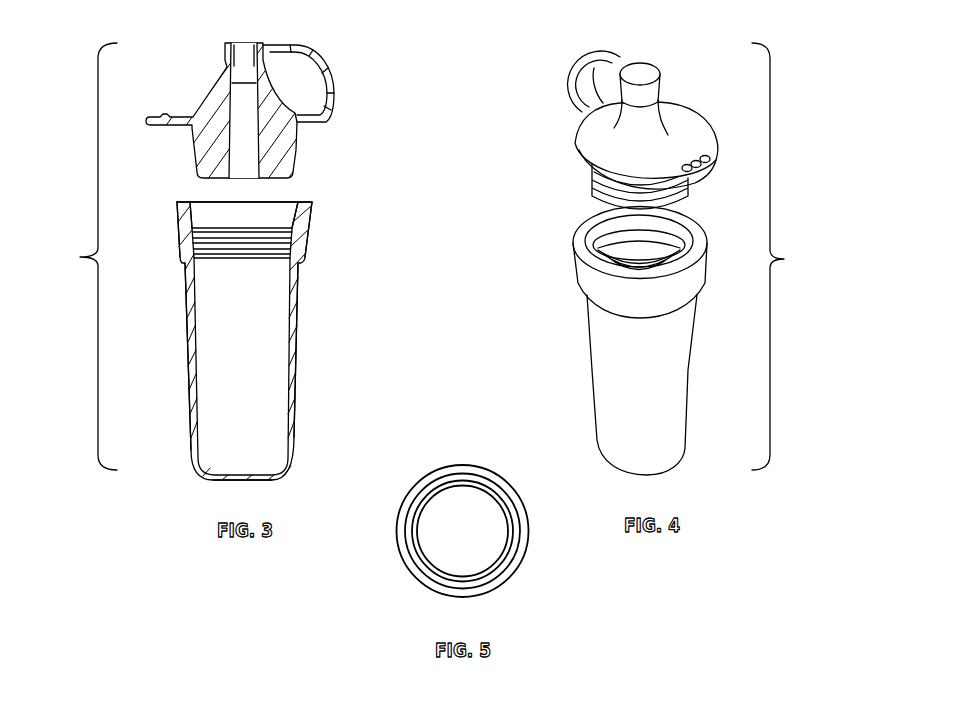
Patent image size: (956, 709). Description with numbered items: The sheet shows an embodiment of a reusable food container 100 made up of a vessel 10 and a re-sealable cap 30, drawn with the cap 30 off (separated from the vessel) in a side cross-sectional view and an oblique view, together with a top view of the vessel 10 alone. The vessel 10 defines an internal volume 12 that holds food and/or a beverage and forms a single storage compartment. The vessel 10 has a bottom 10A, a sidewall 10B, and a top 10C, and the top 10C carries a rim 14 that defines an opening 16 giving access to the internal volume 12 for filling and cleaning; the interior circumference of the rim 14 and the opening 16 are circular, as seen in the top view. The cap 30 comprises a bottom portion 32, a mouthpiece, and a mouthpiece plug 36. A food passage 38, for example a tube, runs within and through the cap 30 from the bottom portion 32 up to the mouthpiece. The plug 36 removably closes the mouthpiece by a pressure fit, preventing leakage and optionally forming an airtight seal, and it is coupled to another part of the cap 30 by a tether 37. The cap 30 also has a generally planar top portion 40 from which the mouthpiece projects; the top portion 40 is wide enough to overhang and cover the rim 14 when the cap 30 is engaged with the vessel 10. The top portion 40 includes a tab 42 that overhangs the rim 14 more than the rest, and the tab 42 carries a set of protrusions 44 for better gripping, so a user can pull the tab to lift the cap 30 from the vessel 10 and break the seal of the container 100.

In FIG. 3, the vessel 10 is at (216, 344).
In FIG. 4, the vessel 10 is at (590, 347).
In FIG. 3, the bottom 10A is at (207, 481).
In FIG. 3, the sidewall 10B is at (190, 382).
In FIG. 3, the top 10C is at (182, 248).
In FIG. 3, the internal volume 12 is at (236, 374).
In FIG. 3, the rim 14 is at (307, 210).
In FIG. 4, the rim 14 is at (586, 222).
In FIG. 5, the rim 14 is at (443, 473).
In FIG. 3, the opening 16 is at (242, 243).
In FIG. 4, the opening 16 is at (664, 229).
In FIG. 5, the opening 16 is at (453, 539).
In FIG. 3, the cap 30 is at (335, 51).
In FIG. 4, the cap 30 is at (624, 116).
In FIG. 3, the bottom portion 32 is at (309, 170).
In FIG. 3, the mouthpiece plug 36 is at (248, 45).
In FIG. 4, the mouthpiece plug 36 is at (659, 83).
In FIG. 3, the tether 37 is at (335, 97).
In FIG. 4, the tether 37 is at (598, 52).
In FIG. 3, the food passage 38 is at (250, 174).
In FIG. 3, the top portion 40 is at (168, 101).
In FIG. 4, the top portion 40 is at (636, 141).
In FIG. 4, the tab 42 is at (710, 143).
In FIG. 4, the protrusions 44 is at (723, 152).
In FIG. 3, the reusable food container 100 is at (75, 256).
In FIG. 4, the reusable food container 100 is at (790, 256).